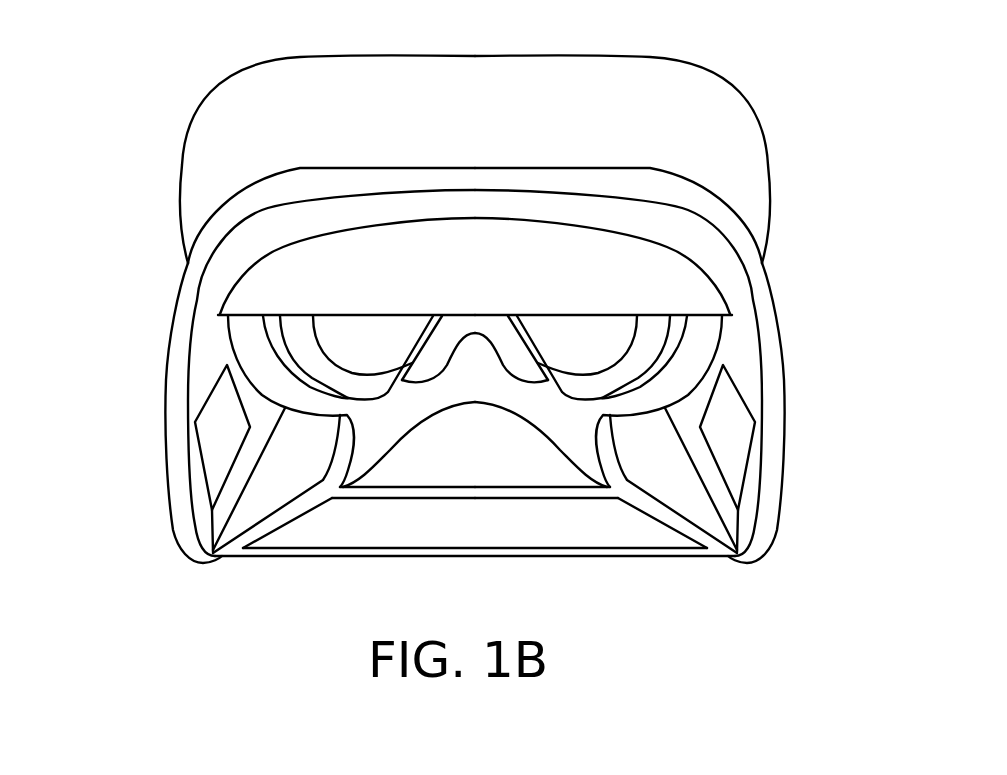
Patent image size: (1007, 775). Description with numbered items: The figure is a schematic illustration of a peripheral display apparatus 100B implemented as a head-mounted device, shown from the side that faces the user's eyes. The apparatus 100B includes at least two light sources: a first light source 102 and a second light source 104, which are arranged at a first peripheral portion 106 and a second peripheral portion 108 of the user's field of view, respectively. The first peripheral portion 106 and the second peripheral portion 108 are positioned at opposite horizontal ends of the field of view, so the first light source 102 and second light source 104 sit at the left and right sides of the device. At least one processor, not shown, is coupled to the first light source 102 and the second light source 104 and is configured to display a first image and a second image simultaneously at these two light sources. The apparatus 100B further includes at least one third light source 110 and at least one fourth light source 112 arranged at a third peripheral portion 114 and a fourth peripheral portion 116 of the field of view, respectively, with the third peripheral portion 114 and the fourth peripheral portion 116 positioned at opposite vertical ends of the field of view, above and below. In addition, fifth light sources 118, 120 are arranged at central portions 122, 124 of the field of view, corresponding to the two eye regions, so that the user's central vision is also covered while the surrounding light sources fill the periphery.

The peripheral display apparatus 100B is at (840, 38).
The first light source 102 is at (197, 452).
The second light source 104 is at (743, 452).
The first peripheral portion 106 is at (207, 517).
The second peripheral portion 108 is at (737, 522).
The third light source 110 is at (733, 320).
The fourth light source 112 is at (590, 540).
The third peripheral portion 114 is at (733, 295).
The fourth peripheral portion 116 is at (683, 550).
The fifth light source 118 is at (325, 334).
The fifth light source 120 is at (645, 320).
The central portion 122 is at (325, 372).
The central portion 124 is at (633, 372).